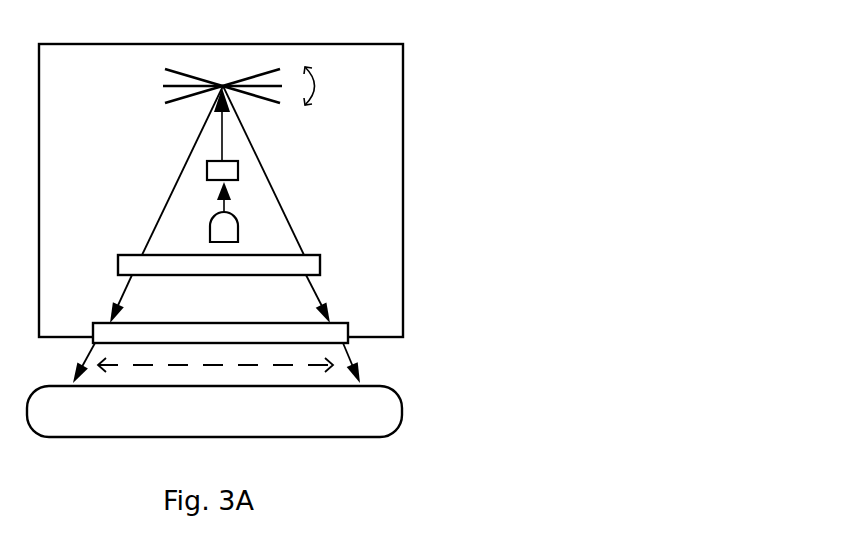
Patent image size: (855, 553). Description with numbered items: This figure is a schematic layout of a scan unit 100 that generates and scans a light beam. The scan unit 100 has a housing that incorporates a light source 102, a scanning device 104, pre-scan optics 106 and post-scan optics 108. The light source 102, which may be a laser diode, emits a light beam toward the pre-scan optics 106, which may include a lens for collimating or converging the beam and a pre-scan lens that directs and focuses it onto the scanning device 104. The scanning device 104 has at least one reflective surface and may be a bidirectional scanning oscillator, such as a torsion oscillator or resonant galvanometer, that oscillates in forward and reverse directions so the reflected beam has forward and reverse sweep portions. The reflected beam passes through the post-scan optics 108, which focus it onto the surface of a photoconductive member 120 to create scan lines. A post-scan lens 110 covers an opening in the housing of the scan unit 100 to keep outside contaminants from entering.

The scan unit 100 is at (403, 90).
The light source 102 is at (233, 213).
The scanning device 104 is at (229, 83).
The pre-scan optics 106 is at (215, 168).
The post-scan optics 108 is at (137, 253).
The post-scan lens 110 is at (342, 323).
The photoconductive member 120 is at (395, 398).